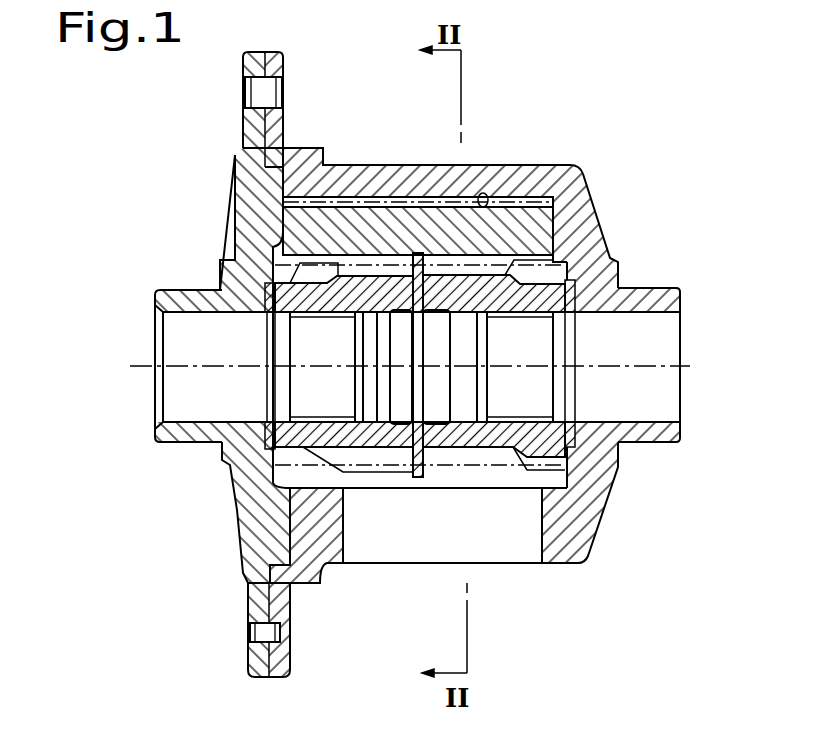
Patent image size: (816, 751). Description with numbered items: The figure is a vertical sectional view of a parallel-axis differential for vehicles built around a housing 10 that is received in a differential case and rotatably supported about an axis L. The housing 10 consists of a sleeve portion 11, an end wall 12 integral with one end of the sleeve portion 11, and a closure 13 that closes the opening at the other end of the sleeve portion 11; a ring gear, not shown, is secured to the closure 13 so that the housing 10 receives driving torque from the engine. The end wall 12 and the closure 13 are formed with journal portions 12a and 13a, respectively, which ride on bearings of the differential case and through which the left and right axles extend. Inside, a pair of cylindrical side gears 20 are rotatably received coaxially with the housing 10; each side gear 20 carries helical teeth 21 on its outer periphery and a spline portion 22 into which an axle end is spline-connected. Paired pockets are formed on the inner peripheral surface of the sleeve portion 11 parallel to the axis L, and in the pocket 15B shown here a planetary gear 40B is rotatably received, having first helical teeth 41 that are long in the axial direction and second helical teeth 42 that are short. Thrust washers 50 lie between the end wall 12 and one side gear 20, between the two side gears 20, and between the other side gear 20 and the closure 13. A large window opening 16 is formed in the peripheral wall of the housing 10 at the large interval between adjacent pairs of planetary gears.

The housing 10 is at (577, 158).
The sleeve portion 11 is at (428, 165).
The end wall 12 is at (595, 200).
The journal portion 12a is at (655, 288).
The closure 13 is at (235, 172).
The journal portion 13a is at (192, 290).
The window opening 16 is at (417, 540).
The side gear 20 is at (316, 449).
The helical teeth 21 is at (380, 474).
The spline portion 22 is at (317, 318).
The planetary gear 40B is at (387, 182).
The first helical teeth 41 is at (357, 200).
The second helical teeth 42 is at (530, 195).
The pocket 15B is at (483, 193).
The thrust washer 50 is at (267, 435).
The axis L is at (702, 360).